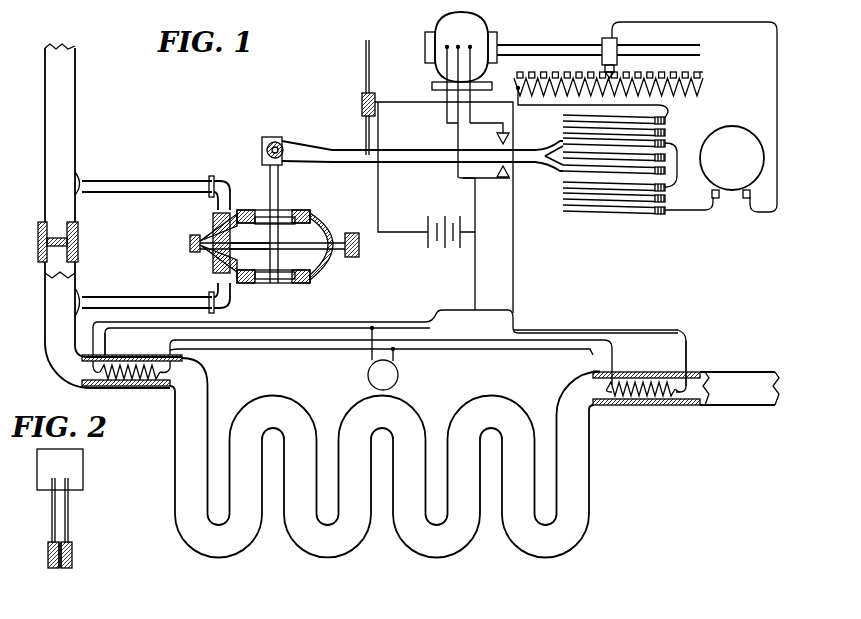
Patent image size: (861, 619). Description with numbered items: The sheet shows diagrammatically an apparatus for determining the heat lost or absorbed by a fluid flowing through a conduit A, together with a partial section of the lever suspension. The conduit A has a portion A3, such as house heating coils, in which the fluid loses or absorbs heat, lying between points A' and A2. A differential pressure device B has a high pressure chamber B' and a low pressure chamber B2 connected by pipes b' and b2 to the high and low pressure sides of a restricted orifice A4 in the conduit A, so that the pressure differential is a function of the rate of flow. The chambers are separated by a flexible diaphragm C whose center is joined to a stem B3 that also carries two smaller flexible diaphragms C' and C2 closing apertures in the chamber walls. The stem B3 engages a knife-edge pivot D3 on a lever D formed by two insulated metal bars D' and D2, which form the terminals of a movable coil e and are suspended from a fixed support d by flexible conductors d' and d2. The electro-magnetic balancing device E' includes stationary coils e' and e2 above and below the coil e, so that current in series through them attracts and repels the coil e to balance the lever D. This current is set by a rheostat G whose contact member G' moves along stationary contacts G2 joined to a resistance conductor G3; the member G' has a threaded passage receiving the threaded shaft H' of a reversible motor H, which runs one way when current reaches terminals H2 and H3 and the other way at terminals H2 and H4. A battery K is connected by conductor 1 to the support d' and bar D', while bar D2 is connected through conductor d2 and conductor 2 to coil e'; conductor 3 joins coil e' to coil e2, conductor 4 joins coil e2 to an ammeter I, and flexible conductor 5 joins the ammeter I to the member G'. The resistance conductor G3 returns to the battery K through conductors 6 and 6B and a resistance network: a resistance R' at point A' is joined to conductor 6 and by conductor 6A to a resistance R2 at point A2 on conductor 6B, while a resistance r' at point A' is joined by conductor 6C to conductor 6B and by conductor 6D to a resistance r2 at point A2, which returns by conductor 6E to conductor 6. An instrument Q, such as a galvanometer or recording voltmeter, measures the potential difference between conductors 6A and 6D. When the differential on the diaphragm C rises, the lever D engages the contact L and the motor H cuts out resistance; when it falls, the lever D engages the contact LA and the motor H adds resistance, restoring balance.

In FIG. 1, the conduit A is at (113, 216).
In FIG. 1, the point in conduit A' is at (176, 389).
In FIG. 1, the point in conduit A2 is at (676, 406).
In FIG. 1, the heat-exchanging portion of conduit A3 is at (387, 465).
In FIG. 1, the restricted orifice A4 is at (40, 238).
In FIG. 1, the pipe b' is at (152, 182).
In FIG. 1, the pipe b2 is at (130, 302).
In FIG. 1, the differential pressure device B is at (334, 232).
In FIG. 1, the high pressure chamber B' is at (272, 237).
In FIG. 1, the low pressure chamber B2 is at (271, 254).
In FIG. 1, the stem B3 is at (269, 180).
In FIG. 1, the flexible diaphragm C is at (204, 239).
In FIG. 1, the flexible diaphragm C' is at (273, 199).
In FIG. 1, the flexible diaphragm C2 is at (286, 283).
In FIG. 1, the lever D is at (422, 138).
In FIG. 1, the metal bar D' is at (593, 152).
In FIG. 2, the metal bar D' is at (32, 555).
In FIG. 1, the metal bar D2 is at (555, 137).
In FIG. 2, the metal bar D2 is at (72, 553).
In FIG. 1, the knife-edge pivot D3 is at (266, 146).
In FIG. 2, the fixed support d is at (48, 469).
In FIG. 1, the flexible conductor d' is at (349, 97).
In FIG. 2, the flexible conductor d' is at (33, 510).
In FIG. 1, the flexible conductor d2 is at (362, 98).
In FIG. 2, the flexible conductor d2 is at (69, 508).
In FIG. 1, the electro-magnetic balancing device E' is at (533, 185).
In FIG. 1, the movable coil e is at (628, 145).
In FIG. 1, the stationary coil e' is at (629, 124).
In FIG. 1, the stationary coil e2 is at (666, 199).
In FIG. 1, the rheostat G is at (633, 84).
In FIG. 1, the contact member G' is at (600, 39).
In FIG. 1, the stationary contacts G2 is at (700, 78).
In FIG. 1, the resistance conductor G3 is at (517, 88).
In FIG. 1, the reversible electric motor H is at (454, 45).
In FIG. 1, the threaded shaft H' is at (598, 31).
In FIG. 1, the motor terminal H2 is at (460, 97).
In FIG. 1, the motor terminal H3 is at (472, 46).
In FIG. 1, the motor terminal H4 is at (445, 46).
In FIG. 1, the ammeter I is at (732, 162).
In FIG. 1, the electric battery K is at (430, 248).
In FIG. 1, the contact L is at (497, 138).
In FIG. 1, the contact LA is at (501, 180).
In FIG. 1, the potential measuring instrument Q is at (383, 359).
In FIG. 1, the resistance R' is at (132, 381).
In FIG. 1, the resistance R2 is at (632, 400).
In FIG. 1, the resistance r' is at (131, 355).
In FIG. 1, the resistance r2 is at (640, 382).
In FIG. 1, the conductor 1 is at (403, 167).
In FIG. 1, the conductor 2 is at (363, 172).
In FIG. 1, the conductor 3 is at (678, 165).
In FIG. 1, the conductor 4 is at (690, 212).
In FIG. 1, the flexible conductor 5 is at (777, 108).
In FIG. 1, the conductor 6 is at (476, 262).
In FIG. 1, the conductor 6A is at (289, 349).
In FIG. 1, the conductor 6B is at (687, 348).
In FIG. 1, the conductor 6C is at (105, 341).
In FIG. 1, the conductor 6D is at (247, 322).
In FIG. 1, the conductor 6E is at (538, 332).